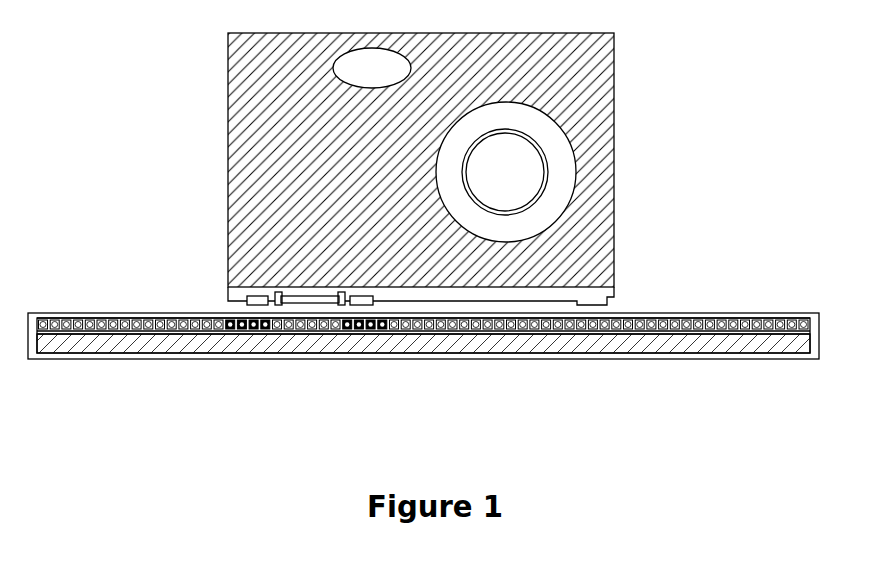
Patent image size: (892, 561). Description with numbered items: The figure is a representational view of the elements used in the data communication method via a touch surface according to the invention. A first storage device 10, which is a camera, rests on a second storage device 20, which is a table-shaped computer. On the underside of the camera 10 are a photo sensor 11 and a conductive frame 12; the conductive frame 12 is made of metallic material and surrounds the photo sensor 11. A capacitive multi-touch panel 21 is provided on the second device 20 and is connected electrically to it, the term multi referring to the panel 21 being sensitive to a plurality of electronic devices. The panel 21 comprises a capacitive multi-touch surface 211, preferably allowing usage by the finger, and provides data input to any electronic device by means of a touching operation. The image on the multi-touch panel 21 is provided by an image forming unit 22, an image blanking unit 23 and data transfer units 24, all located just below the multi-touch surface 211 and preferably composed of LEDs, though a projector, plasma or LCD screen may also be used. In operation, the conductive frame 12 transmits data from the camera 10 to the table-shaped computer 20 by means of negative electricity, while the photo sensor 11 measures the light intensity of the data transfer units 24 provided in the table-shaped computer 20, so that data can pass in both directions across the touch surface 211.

The first storage device 10 is at (328, 123).
The photo sensor 11 is at (283, 292).
The conductive frame 12 is at (258, 300).
The second storage device 20 is at (117, 343).
The multi-touch panel 21 is at (722, 315).
The multi-touch surface 211 is at (637, 315).
The image forming unit 22 is at (170, 323).
The image blanking unit 23 is at (260, 323).
The data transfer units 24 is at (322, 323).